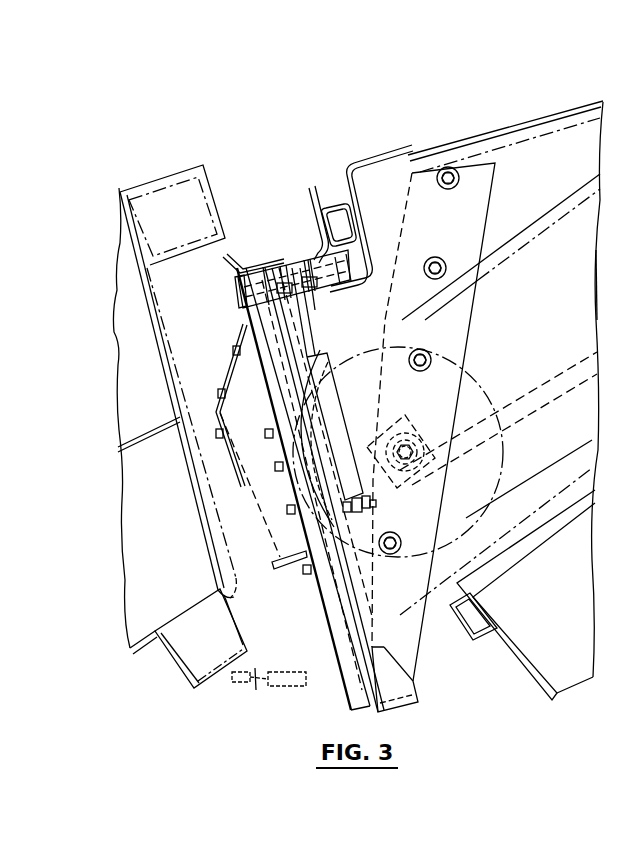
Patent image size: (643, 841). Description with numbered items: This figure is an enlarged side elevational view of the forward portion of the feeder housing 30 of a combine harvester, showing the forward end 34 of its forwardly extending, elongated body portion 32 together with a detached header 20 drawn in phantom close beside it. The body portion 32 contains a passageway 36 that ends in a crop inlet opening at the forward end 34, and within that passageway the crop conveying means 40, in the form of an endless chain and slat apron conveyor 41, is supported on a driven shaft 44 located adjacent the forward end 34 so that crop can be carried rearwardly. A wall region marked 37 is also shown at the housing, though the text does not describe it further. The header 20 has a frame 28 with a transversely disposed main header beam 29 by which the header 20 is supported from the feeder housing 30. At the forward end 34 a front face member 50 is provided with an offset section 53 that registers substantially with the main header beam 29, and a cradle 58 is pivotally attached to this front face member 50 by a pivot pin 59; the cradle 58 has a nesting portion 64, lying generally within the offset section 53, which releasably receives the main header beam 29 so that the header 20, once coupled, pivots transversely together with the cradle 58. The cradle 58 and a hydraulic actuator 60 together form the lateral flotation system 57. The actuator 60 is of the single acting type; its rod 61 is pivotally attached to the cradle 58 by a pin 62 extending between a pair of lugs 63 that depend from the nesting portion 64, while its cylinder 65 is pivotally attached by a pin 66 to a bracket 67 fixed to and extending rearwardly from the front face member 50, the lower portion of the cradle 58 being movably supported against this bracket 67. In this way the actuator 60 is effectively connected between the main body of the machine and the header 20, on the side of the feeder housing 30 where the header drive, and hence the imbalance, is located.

The header 20 is at (132, 362).
The frame 28 is at (186, 668).
The main header beam 29 is at (160, 200).
The feeder housing 30 is at (472, 136).
The body portion 32 is at (535, 126).
The forward end 34 is at (252, 522).
The passageway 36 is at (584, 478).
The side wall 37 is at (591, 280).
The crop conveying means 40 is at (526, 470).
The apron conveyor 41 is at (531, 226).
The driven shaft 44 is at (418, 446).
The front face member 50 is at (280, 346).
The offset section 53 is at (358, 292).
The lateral flotation system 57 is at (299, 194).
The cradle 58 is at (345, 685).
The pivot pin 59 is at (236, 298).
The hydraulic actuator 60 is at (358, 398).
The rod 61 is at (318, 347).
The pin 62 is at (320, 260).
The lugs 63 is at (292, 263).
The nesting portion 64 is at (233, 252).
The cylinder 65 is at (341, 432).
The pin 66 is at (376, 505).
The bracket 67 is at (381, 535).